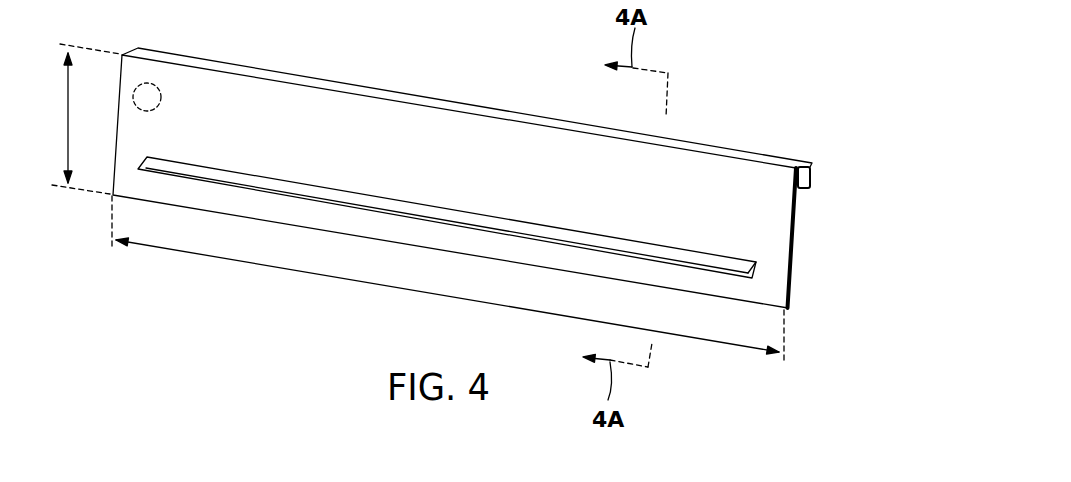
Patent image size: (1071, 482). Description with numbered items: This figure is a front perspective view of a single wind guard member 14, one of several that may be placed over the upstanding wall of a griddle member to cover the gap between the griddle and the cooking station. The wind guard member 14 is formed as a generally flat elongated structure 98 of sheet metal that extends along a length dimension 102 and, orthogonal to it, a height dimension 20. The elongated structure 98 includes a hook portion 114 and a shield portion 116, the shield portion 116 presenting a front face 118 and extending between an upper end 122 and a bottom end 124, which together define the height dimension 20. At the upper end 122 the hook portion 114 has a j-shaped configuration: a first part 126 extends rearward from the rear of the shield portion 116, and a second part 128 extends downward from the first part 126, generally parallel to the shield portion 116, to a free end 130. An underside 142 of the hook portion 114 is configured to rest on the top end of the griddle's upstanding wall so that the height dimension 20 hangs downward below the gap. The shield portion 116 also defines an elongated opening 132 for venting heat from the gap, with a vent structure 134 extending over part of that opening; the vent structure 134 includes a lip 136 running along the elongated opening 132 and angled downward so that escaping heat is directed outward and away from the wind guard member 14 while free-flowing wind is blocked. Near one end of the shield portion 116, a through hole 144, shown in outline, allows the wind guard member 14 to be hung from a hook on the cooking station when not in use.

The wind guard member 14 is at (833, 142).
The height dimension 20 is at (66, 108).
The elongated structure 98 is at (805, 229).
The length dimension 102 is at (733, 346).
The hook portion 114 is at (828, 174).
The shield portion 116 is at (760, 233).
The front face 118 is at (772, 270).
The upper end 122 is at (785, 161).
The bottom end 124 is at (767, 304).
The first part 126 is at (722, 154).
The second part 128 is at (813, 184).
The free end 130 is at (803, 190).
The elongated opening 132 is at (202, 183).
The vent structure 134 is at (224, 168).
The lip 136 is at (358, 197).
The underside 142 is at (817, 166).
The through hole 144 is at (156, 90).